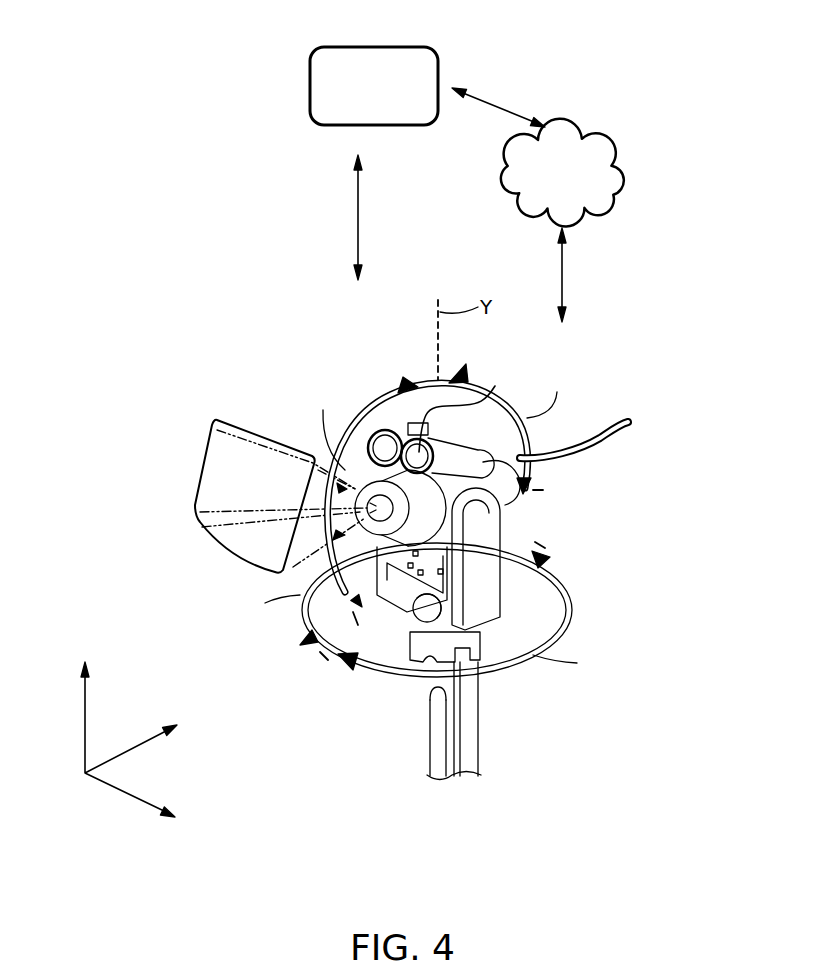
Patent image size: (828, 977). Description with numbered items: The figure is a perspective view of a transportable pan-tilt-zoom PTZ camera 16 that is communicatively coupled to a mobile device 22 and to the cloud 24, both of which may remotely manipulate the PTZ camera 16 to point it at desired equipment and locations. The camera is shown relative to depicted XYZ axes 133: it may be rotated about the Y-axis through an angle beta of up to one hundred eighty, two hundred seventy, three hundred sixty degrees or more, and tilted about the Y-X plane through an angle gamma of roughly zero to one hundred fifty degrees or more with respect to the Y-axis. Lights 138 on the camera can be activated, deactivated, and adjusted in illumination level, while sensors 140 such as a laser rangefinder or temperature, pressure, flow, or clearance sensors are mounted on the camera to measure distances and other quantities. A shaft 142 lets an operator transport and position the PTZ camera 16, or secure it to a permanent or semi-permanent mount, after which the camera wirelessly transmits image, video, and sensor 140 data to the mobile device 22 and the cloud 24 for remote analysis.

The PTZ camera 16 is at (158, 366).
The mobile device 22 is at (372, 47).
The cloud 24 is at (628, 177).
The XYZ axes 133 is at (76, 792).
The lights 138 is at (430, 465).
The sensors 140 is at (495, 386).
The shaft 142 is at (479, 735).